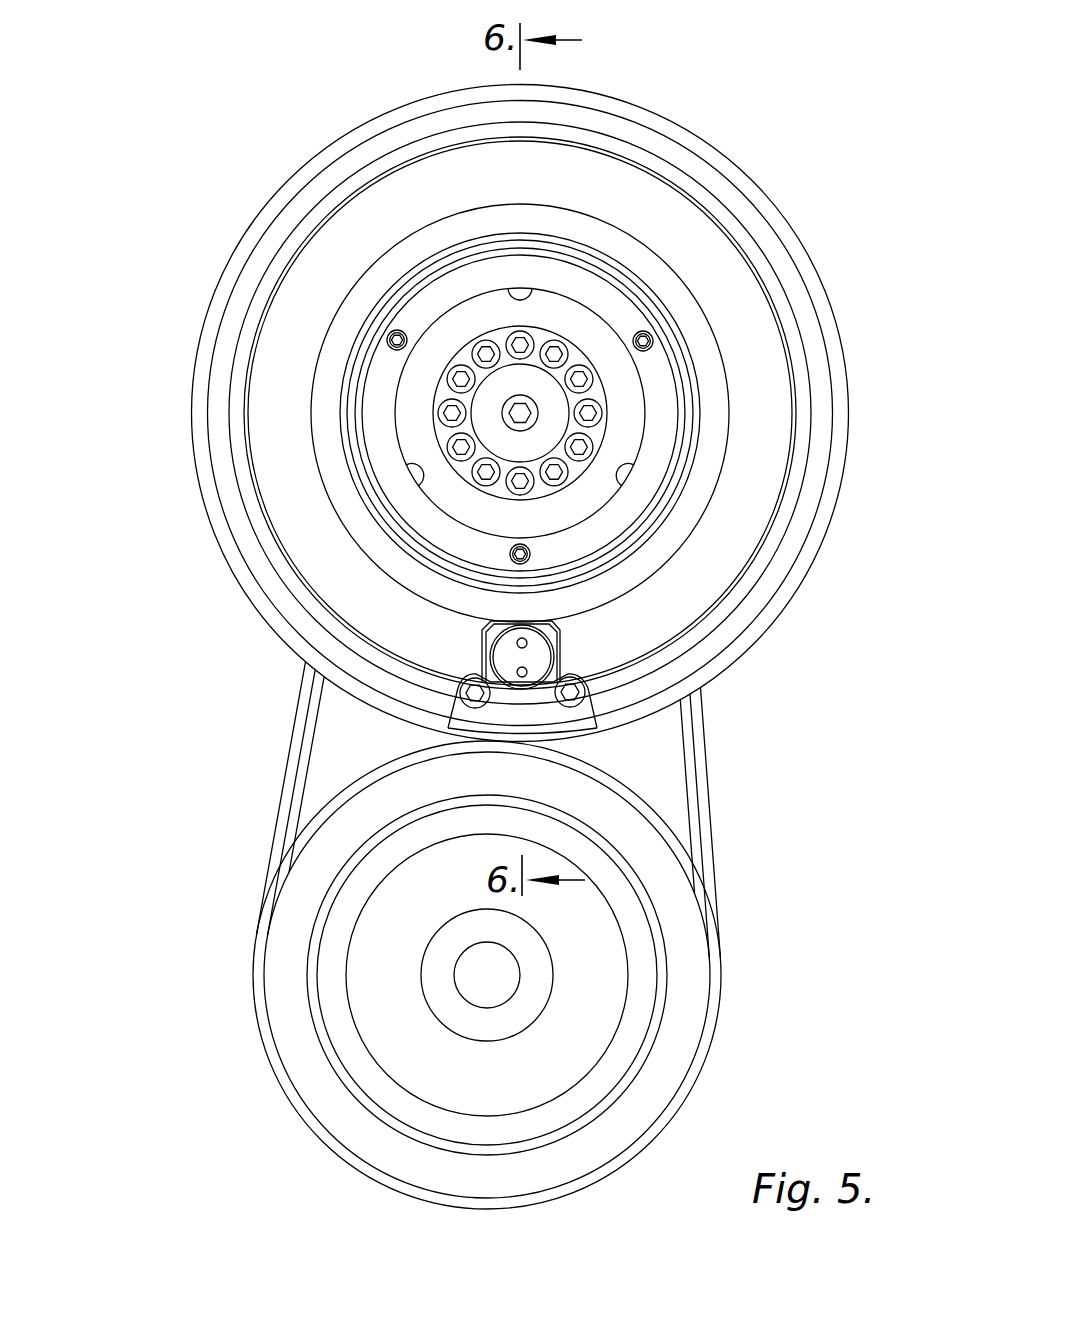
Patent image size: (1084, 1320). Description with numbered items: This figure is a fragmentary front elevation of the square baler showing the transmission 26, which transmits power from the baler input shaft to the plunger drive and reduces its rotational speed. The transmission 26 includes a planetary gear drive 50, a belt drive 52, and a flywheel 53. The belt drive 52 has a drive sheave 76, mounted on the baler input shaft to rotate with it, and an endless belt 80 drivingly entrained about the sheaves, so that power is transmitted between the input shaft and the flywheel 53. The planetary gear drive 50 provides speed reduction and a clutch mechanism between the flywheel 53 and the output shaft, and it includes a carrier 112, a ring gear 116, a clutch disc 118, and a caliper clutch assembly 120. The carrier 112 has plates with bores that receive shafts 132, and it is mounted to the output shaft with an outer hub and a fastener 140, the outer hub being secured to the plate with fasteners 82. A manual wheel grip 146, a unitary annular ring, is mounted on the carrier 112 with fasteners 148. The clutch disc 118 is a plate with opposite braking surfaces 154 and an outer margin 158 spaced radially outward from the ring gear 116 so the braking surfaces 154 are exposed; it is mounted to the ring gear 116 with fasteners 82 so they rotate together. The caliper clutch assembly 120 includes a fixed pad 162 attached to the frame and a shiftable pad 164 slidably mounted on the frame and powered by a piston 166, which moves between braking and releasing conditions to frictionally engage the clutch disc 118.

The transmission 26 is at (153, 92).
The planetary gear drive 50 is at (358, 492).
The belt drive 52 is at (295, 905).
The flywheel 53 is at (233, 284).
The drive sheave 76 is at (688, 955).
The endless belt 80 is at (703, 780).
The fasteners 82 is at (480, 342).
The carrier 112 is at (672, 180).
The ring gear 116 is at (533, 220).
The clutch disc 118 is at (460, 177).
The caliper clutch assembly 120 is at (598, 713).
The shafts 132 is at (607, 253).
The fastener 140 is at (530, 414).
The manual wheel grip 146 is at (663, 383).
The fasteners 148 is at (393, 332).
The braking surfaces 154 is at (527, 165).
The outer margin 158 is at (632, 170).
The fixed pad 162 is at (595, 740).
The shiftable pad 164 is at (555, 622).
The piston 166 is at (560, 633).